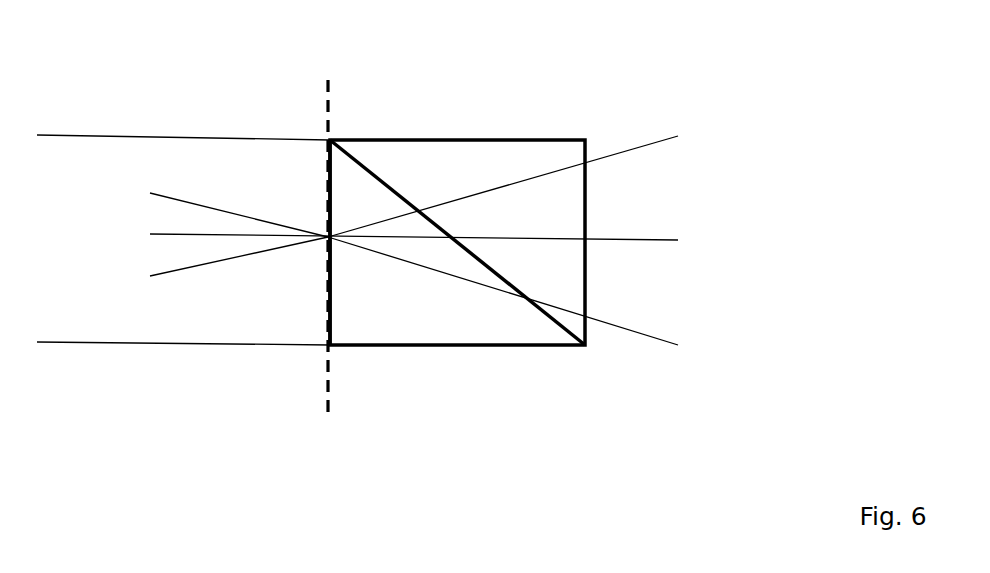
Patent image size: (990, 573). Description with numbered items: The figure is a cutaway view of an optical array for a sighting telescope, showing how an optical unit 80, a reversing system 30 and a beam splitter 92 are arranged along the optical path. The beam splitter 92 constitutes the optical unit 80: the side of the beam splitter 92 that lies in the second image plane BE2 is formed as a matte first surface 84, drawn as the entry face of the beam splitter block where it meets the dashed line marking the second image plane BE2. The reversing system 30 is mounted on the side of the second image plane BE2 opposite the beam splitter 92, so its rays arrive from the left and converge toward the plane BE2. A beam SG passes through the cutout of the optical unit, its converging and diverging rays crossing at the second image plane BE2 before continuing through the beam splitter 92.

The reversing system 30 is at (122, 134).
The beam SG is at (231, 211).
The second image plane BE2 is at (333, 235).
The optical unit 80 is at (457, 201).
The beam splitter 92 is at (468, 165).
The matte first surface 84 is at (327, 291).